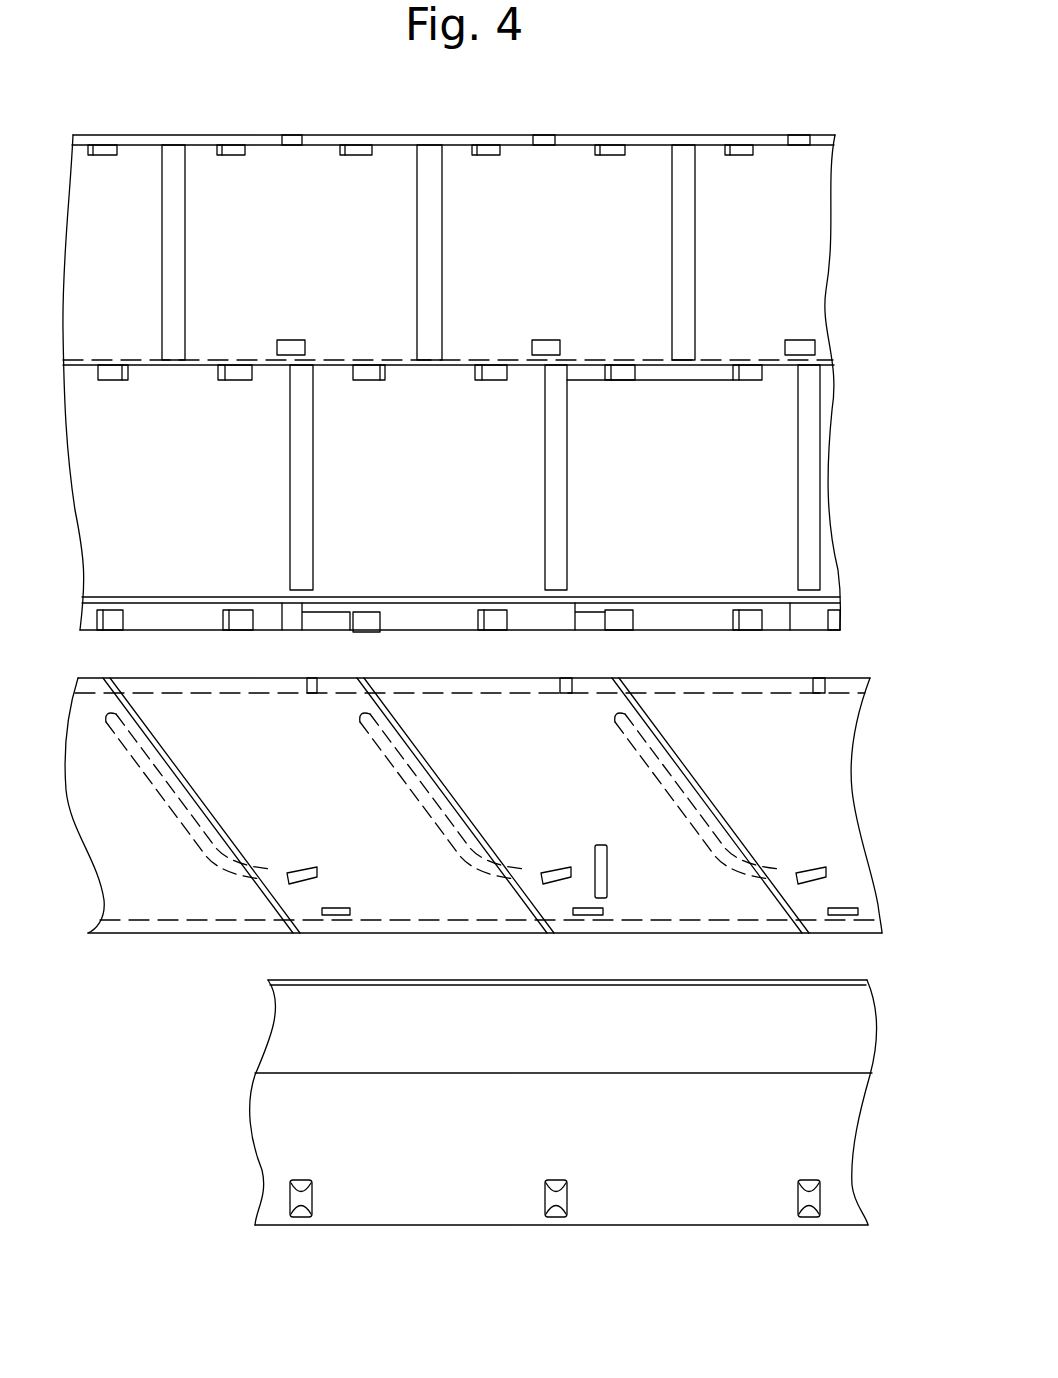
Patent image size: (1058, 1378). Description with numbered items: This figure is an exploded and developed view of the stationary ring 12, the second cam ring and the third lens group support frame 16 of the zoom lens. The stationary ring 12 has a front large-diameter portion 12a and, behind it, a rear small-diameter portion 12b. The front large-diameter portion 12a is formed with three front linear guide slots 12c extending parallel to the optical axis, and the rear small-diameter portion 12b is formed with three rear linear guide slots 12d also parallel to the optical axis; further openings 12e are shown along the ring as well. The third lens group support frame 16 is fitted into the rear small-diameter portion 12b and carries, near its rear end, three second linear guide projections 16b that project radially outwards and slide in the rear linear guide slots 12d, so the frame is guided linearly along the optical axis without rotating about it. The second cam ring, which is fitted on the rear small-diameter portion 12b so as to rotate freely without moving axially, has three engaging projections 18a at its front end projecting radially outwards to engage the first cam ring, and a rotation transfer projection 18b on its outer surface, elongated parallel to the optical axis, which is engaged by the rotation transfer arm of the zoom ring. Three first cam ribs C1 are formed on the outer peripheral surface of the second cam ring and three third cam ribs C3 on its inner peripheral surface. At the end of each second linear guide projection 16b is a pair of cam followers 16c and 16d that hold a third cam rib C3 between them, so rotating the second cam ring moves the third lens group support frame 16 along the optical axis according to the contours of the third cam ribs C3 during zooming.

The stationary ring 12 is at (822, 280).
The front large-diameter portion 12a is at (795, 308).
The rear small-diameter portion 12b is at (770, 497).
The front linear guide slots 12c is at (418, 276).
The rear linear guide slots 12d is at (313, 478).
The slots 12e is at (292, 140).
The first cam ribs C1 is at (403, 740).
The third cam ribs C3 is at (420, 808).
The engaging projections 18a is at (318, 684).
The rotation transfer projection 18b is at (601, 845).
The third lens group support frame 16 is at (810, 1118).
The second linear guide projections 16b is at (318, 1203).
The cam follower 16c is at (307, 1183).
The cam follower 16d is at (299, 1213).